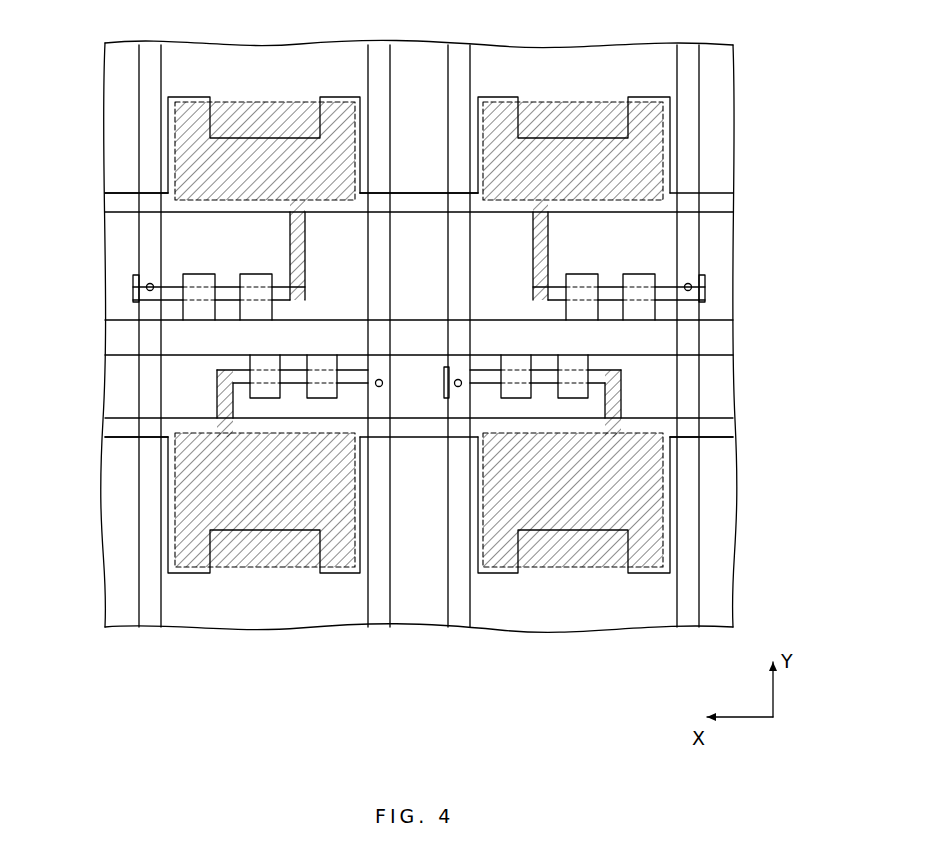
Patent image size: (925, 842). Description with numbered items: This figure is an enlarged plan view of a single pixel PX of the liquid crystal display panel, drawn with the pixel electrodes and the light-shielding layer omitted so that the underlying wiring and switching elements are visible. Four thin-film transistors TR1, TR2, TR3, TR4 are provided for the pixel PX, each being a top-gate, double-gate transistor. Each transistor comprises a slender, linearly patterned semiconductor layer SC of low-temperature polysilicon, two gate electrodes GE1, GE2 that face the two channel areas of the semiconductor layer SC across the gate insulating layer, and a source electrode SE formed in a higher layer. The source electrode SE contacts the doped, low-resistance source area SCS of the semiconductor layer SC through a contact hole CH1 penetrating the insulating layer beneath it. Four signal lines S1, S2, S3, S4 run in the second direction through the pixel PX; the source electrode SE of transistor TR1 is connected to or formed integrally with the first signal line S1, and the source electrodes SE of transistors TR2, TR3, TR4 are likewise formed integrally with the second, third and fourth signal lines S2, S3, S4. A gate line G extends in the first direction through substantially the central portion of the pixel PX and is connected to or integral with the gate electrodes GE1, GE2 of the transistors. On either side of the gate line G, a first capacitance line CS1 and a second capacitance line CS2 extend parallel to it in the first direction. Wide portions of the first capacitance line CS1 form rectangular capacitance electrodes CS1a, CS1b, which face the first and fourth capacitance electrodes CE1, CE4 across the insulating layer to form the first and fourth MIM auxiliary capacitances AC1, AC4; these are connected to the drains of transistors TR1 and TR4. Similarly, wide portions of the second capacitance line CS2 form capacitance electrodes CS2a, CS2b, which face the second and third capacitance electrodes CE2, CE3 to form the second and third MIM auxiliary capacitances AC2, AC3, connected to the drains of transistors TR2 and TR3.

The first signal line S1 is at (151, 55).
The second signal line S2 is at (380, 55).
The third signal line S3 is at (460, 55).
The fourth signal line S4 is at (689, 55).
The pixel PX is at (748, 124).
The first capacitance line CS1 is at (107, 197).
The capacitance electrode CS1a is at (165, 123).
The capacitance electrode CS1b is at (470, 167).
The second capacitance line CS2 is at (107, 437).
The capacitance electrode CS2a is at (168, 548).
The capacitance electrode CS2b is at (672, 552).
The first MIM auxiliary capacitance AC1 is at (170, 143).
The second MIM auxiliary capacitance AC2 is at (170, 518).
The third MIM auxiliary capacitance AC3 is at (648, 510).
The fourth MIM auxiliary capacitance AC4 is at (645, 171).
The first capacitance electrode CE1 is at (211, 204).
The second capacitance electrode CE2 is at (207, 437).
The third capacitance electrode CE3 is at (636, 428).
The fourth capacitance electrode CE4 is at (610, 200).
The gate line G is at (108, 340).
The gate electrode GE1 is at (199, 286).
The gate electrode GE2 is at (255, 286).
The semiconductor layer SC is at (290, 302).
The source area SCS is at (140, 300).
The source electrode SE is at (131, 280).
The contact hole CH1 is at (145, 287).
The thin-film transistor TR1 is at (282, 275).
The thin-film transistor TR2 is at (328, 352).
The thin-film transistor TR3 is at (526, 404).
The thin-film transistor TR4 is at (555, 275).